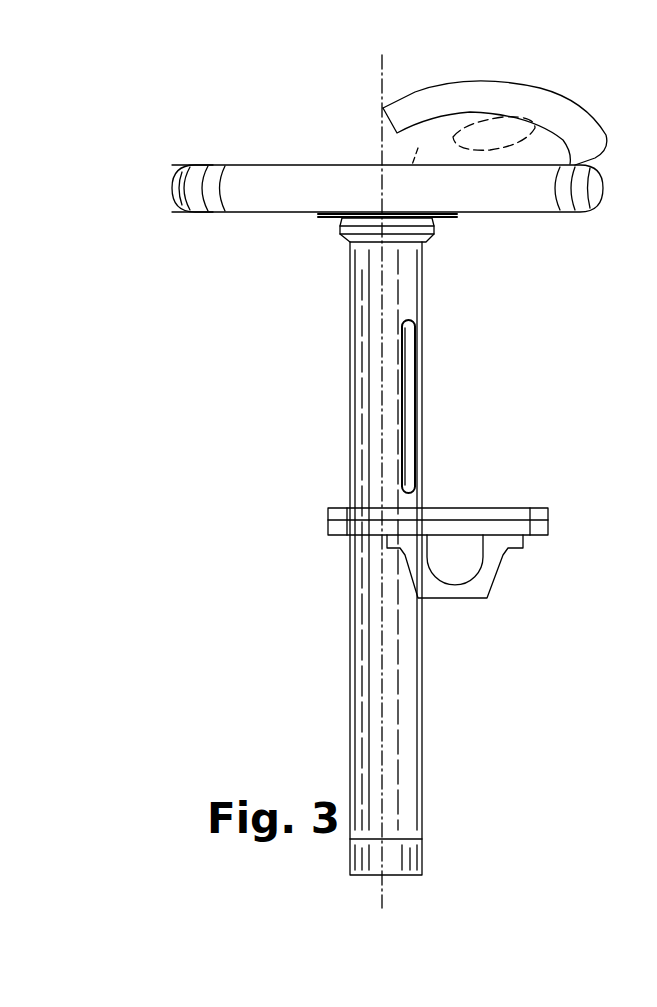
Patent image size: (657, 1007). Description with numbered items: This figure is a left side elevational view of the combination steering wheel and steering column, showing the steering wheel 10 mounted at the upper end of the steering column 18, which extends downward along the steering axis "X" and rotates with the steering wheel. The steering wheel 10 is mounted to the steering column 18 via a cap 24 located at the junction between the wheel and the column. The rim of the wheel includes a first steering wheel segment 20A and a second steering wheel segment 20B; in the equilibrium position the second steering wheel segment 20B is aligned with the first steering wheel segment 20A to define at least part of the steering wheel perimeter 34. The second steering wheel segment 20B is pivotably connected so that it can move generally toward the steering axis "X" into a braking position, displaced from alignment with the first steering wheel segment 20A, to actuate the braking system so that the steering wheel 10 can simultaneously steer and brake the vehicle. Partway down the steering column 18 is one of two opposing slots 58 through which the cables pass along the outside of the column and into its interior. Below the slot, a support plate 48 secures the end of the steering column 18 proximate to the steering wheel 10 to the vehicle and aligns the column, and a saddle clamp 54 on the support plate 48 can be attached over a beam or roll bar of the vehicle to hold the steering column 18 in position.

The steering wheel 10 is at (178, 172).
The steering wheel perimeter 34 is at (175, 186).
The first steering wheel segment 20A is at (228, 165).
The second steering wheel segment 20B is at (598, 130).
The cap 24 is at (430, 219).
The steering column 18 is at (422, 752).
The slot 58 is at (410, 395).
The support plate 48 is at (490, 508).
The saddle clamp 54 is at (486, 599).
The steering axis X is at (382, 88).